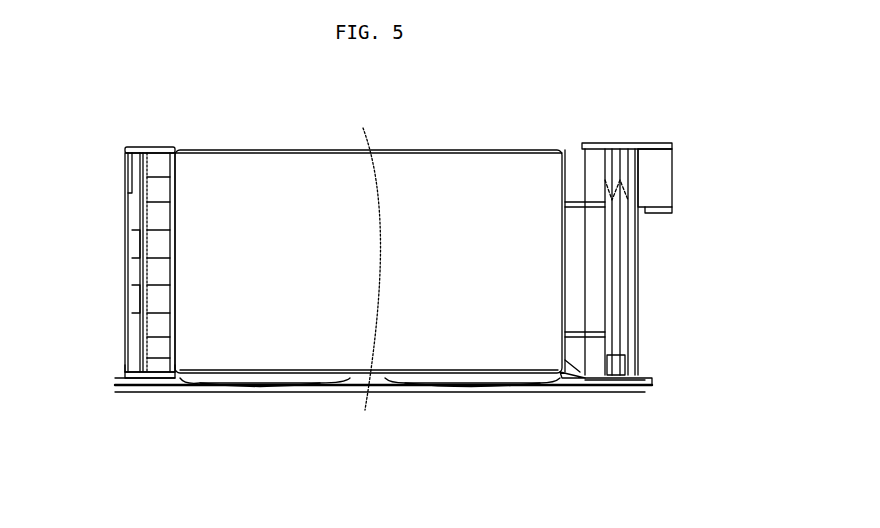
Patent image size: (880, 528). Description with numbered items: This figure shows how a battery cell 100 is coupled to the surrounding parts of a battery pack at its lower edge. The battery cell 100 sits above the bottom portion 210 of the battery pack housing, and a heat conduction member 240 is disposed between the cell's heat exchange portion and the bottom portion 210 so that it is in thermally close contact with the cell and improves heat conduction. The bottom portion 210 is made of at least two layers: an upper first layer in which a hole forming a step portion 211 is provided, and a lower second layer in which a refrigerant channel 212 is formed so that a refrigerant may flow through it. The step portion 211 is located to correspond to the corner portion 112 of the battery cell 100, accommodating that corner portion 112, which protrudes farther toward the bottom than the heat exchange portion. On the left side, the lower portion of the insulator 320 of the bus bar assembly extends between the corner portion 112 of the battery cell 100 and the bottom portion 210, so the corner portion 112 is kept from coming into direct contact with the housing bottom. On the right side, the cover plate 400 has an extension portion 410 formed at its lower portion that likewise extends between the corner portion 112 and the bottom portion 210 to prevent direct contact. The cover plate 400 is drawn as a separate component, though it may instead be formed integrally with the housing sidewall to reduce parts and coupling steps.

The battery cell 100 is at (260, 152).
The corner portion 112 is at (125, 397).
The bottom portion 210 is at (295, 393).
The step portion 211 is at (560, 393).
The refrigerant channel 212 is at (415, 392).
The heat conduction member 240 is at (168, 398).
The insulator 320 is at (125, 238).
The cover plate 400 is at (625, 292).
The extension portion 410 is at (600, 393).